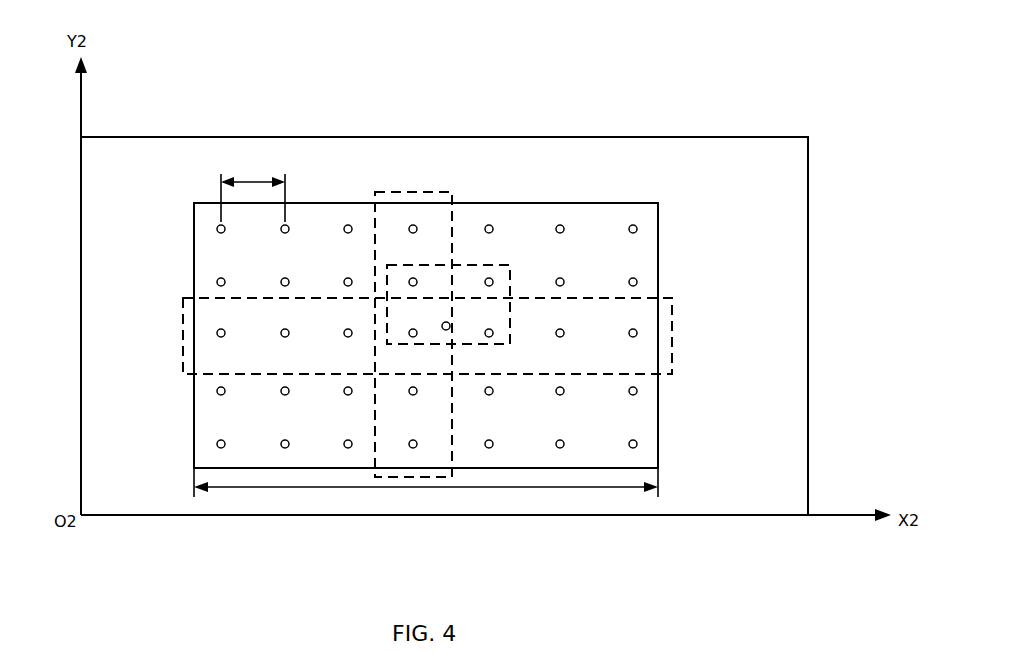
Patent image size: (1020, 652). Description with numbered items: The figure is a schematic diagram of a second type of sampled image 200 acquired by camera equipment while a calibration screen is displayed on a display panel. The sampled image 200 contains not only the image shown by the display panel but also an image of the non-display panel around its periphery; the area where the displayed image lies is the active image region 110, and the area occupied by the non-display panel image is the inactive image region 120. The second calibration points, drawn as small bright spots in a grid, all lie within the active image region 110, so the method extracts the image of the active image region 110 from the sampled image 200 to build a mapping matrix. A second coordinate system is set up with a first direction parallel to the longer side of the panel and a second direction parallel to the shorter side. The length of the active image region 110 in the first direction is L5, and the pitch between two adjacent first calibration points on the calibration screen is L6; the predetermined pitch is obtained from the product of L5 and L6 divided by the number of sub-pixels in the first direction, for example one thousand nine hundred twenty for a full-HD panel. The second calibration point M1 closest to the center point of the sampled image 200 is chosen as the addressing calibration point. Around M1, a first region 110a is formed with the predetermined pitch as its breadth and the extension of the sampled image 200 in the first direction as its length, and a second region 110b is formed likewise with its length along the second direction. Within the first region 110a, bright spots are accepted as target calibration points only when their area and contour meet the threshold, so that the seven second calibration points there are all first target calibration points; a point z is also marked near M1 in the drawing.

The sampled image 200 is at (226, 24).
The inactive image region 120 is at (787, 273).
The active image region 110 is at (571, 203).
The first region 110a is at (172, 340).
The second region 110b is at (410, 178).
The second calibration point M1 is at (422, 343).
The reference point z is at (508, 356).
The length of the active image region in the first direction L5 is at (426, 490).
The pitch of two adjacent first calibration points L6 is at (253, 188).